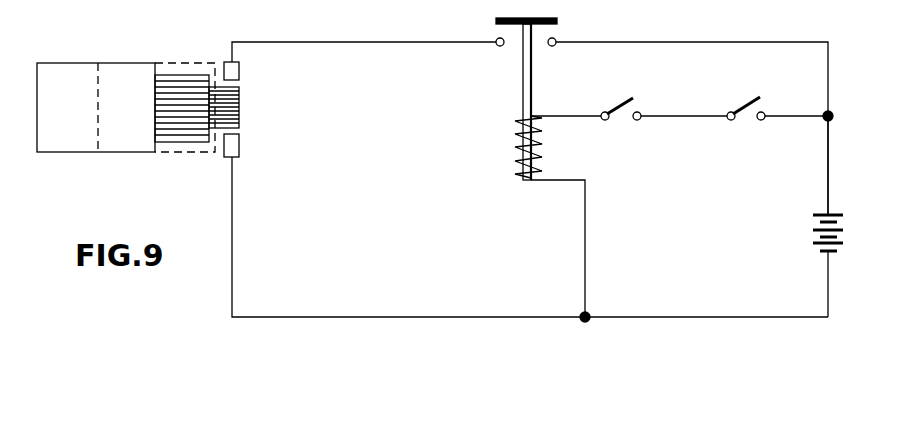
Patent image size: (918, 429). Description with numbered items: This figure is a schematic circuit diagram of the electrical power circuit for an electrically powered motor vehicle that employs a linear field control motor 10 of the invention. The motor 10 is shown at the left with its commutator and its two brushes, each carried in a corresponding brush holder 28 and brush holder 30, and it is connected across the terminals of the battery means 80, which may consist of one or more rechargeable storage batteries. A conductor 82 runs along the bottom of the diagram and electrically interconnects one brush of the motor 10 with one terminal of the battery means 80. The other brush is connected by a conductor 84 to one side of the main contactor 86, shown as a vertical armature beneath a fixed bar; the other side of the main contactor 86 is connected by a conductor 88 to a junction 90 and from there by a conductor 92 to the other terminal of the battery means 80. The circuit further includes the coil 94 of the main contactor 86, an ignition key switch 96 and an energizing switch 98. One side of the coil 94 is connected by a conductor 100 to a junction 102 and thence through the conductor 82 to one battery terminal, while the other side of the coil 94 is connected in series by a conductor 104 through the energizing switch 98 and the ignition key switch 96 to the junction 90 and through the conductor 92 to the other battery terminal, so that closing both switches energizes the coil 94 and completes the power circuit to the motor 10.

The linear field control motor 10 is at (125, 62).
The brush holder 28 is at (239, 68).
The brush holder 30 is at (239, 143).
The battery means 80 is at (818, 248).
The conductor 82 is at (455, 318).
The conductor 84 is at (378, 42).
The main contactor 86 is at (522, 80).
The conductor 88 is at (713, 42).
The junction 90 is at (828, 112).
The conductor 92 is at (828, 155).
The coil 94 is at (522, 155).
The ignition key switch 96 is at (743, 95).
The energizing switch 98 is at (615, 100).
The conductor 100 is at (587, 240).
The junction 102 is at (587, 320).
The conductor 104 is at (568, 115).